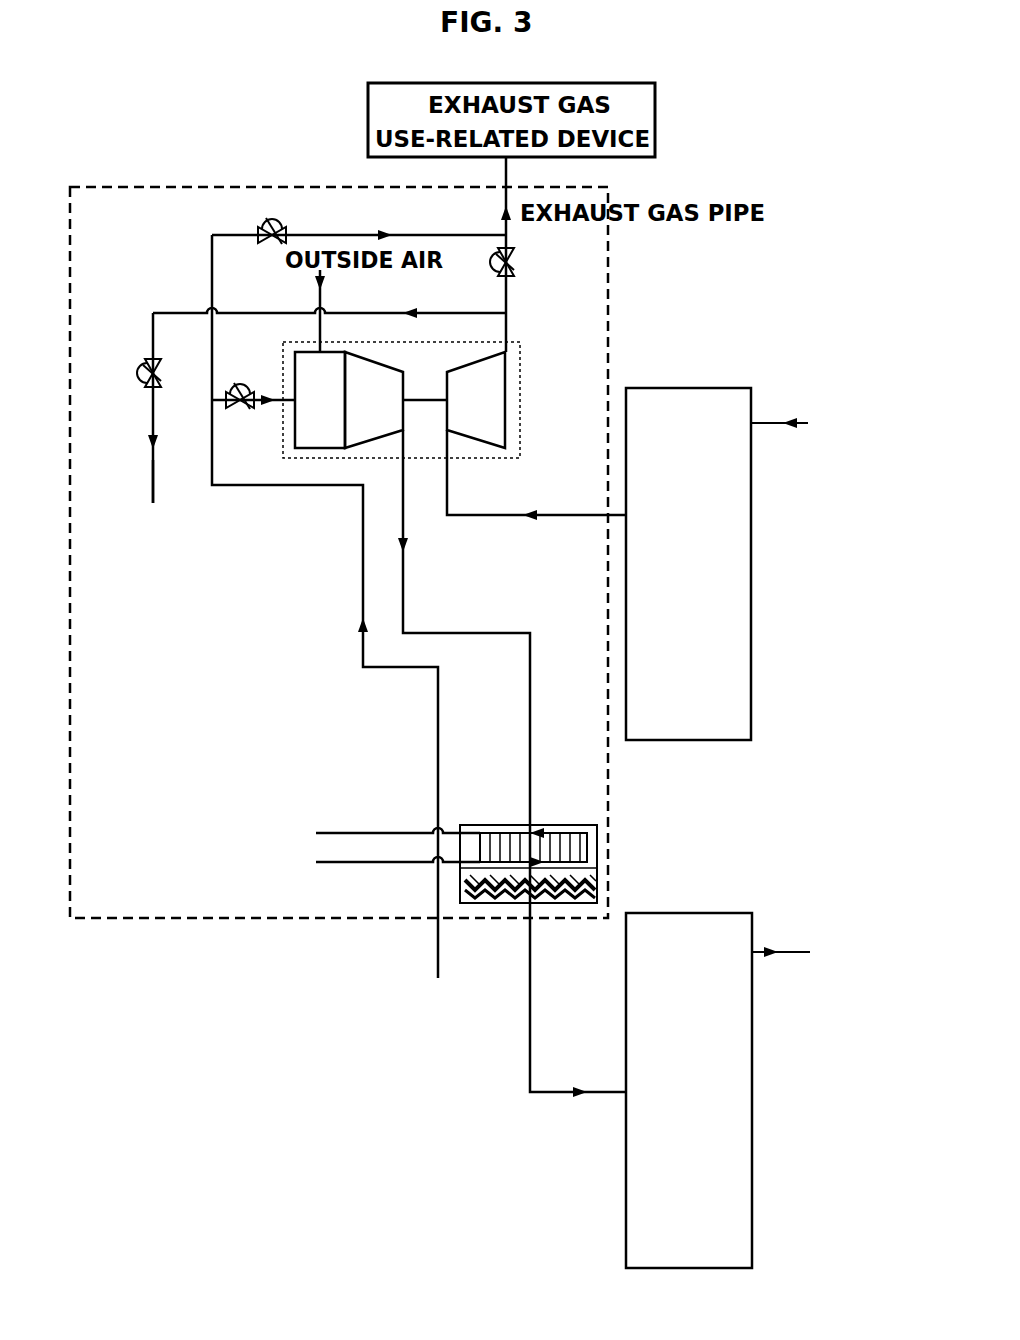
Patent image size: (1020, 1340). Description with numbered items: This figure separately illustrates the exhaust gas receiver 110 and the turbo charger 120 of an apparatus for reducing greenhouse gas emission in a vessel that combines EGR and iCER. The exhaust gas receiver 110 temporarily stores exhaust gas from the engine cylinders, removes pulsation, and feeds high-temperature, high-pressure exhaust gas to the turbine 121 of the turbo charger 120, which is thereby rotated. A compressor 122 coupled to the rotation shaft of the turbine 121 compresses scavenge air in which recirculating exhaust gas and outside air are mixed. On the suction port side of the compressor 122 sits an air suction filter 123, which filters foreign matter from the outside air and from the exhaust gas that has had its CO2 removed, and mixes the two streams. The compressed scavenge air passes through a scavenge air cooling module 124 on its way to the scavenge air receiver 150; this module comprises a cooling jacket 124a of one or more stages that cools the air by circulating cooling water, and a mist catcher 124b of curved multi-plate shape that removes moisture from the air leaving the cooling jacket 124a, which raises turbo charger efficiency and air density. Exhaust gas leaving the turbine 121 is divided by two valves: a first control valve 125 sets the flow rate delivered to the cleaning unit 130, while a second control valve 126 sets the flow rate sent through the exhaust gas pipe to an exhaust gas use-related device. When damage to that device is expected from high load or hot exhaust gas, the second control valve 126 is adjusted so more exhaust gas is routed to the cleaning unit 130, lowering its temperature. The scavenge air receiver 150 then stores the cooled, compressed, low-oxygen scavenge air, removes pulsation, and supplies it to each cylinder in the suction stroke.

The exhaust gas receiver 110 is at (717, 564).
The turbo charger 120 is at (137, 175).
The turbine 121 is at (476, 400).
The compressor 122 is at (374, 400).
The air suction filter 123 is at (320, 400).
The scavenge air cooling module 124 is at (507, 854).
The cooling jacket 124a is at (502, 847).
The mist catcher 124b is at (507, 886).
The first control valve 125 is at (130, 408).
The second control valve 126 is at (484, 262).
The cleaning unit 130 is at (168, 530).
The scavenge air receiver 150 is at (718, 1090).